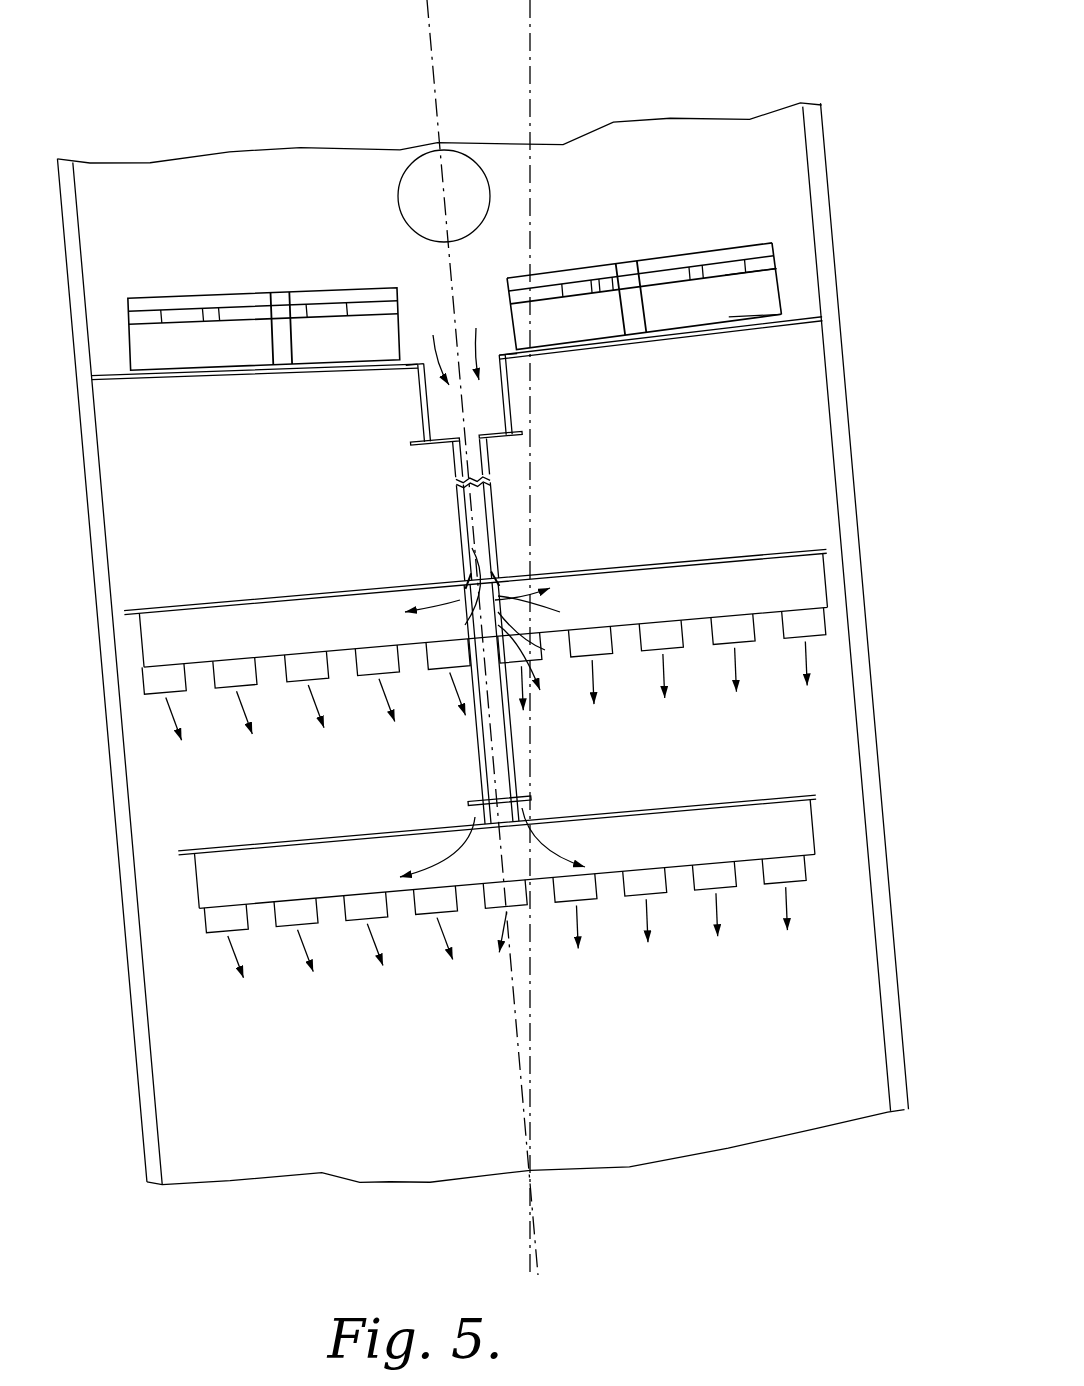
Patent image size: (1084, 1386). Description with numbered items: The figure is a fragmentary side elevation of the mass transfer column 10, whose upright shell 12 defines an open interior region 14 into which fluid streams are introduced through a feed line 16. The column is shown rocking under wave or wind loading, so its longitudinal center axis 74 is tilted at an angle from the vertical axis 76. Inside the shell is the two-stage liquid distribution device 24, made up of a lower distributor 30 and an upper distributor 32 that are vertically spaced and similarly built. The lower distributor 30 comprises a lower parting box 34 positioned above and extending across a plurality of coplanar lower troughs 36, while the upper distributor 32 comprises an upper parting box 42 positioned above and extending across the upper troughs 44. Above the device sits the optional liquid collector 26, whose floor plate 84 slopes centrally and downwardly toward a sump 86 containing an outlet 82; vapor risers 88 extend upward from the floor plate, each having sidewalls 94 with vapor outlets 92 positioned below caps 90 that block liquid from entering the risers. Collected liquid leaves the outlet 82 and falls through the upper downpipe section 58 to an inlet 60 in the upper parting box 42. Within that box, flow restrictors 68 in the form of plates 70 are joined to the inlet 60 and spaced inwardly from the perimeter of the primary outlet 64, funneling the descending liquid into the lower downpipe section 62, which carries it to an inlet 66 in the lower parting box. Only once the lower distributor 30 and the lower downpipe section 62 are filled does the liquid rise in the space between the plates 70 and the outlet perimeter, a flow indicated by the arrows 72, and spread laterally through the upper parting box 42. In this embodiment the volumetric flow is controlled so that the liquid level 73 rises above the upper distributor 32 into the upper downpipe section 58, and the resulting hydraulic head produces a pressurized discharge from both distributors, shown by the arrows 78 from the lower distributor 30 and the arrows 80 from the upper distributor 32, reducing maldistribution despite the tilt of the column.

The mass transfer column 10 is at (496, 628).
The shell 12 is at (818, 160).
The open interior region 14 is at (703, 148).
The feed line 16 is at (470, 214).
The two-stage liquid distribution device 24 is at (525, 608).
The liquid collector 26 is at (704, 301).
The lower distributor 30 is at (562, 868).
The upper distributor 32 is at (525, 617).
The lower parting box 34 is at (735, 820).
The lower troughs 36 is at (812, 878).
The upper parting box 42 is at (762, 562).
The upper troughs 44 is at (822, 628).
The upper downpipe section 58 is at (481, 509).
The inlet 60 is at (476, 575).
The lower downpipe section 62 is at (478, 740).
The primary outlet 64 is at (522, 662).
The inlet 66 is at (510, 815).
The flow restrictors 68 is at (492, 592).
The plates 70 is at (502, 590).
The arrows 72 is at (432, 605).
The liquid level 73 is at (478, 482).
The longitudinal center axis 74 is at (430, 53).
The vertical axis 76 is at (531, 53).
The arrows 78 is at (652, 918).
The arrows 80 is at (666, 668).
The outlet 82 is at (452, 445).
The floor plate 84 is at (613, 340).
The sump 86 is at (420, 393).
The vapor risers 88 is at (788, 291).
The caps 90 is at (762, 246).
The vapor outlets 92 is at (768, 268).
The sidewalls 94 is at (782, 312).